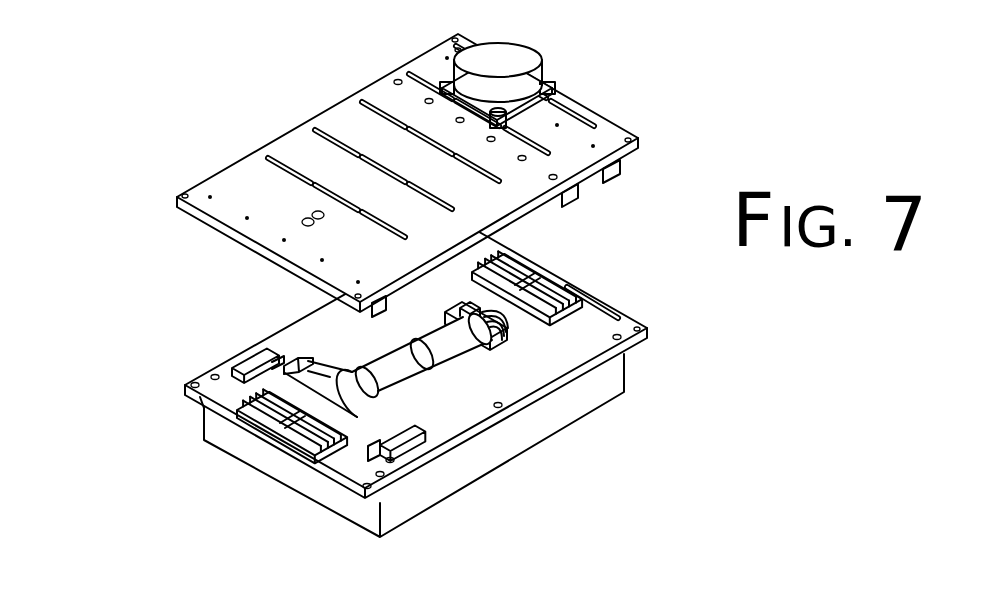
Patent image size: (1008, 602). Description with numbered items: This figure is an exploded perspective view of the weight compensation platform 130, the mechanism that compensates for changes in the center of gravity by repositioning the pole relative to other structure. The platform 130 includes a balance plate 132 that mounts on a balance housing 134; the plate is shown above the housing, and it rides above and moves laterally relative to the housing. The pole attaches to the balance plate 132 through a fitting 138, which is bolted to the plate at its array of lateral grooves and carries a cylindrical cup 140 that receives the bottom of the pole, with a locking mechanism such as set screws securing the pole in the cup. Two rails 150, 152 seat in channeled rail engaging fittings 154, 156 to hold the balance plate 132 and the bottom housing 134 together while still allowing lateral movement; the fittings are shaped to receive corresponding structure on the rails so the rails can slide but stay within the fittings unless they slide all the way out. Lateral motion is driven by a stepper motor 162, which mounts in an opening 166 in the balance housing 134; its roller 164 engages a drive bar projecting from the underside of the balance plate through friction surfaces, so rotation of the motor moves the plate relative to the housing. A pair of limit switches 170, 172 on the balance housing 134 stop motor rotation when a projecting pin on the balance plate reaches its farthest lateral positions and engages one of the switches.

The weight compensation platform 130 is at (226, 307).
The balance plate 132 is at (228, 165).
The balance housing 134 is at (647, 317).
The fitting 138 is at (556, 91).
The cylindrical cup 140 is at (538, 56).
The rail 150 is at (357, 312).
The rail 152 is at (578, 197).
The rail engaging fitting 154 is at (307, 430).
The rail engaging fitting 156 is at (577, 280).
The stepper motor 162 is at (403, 380).
The roller 164 is at (503, 323).
The opening 166 is at (427, 333).
The limit switch 170 is at (200, 397).
The limit switch 172 is at (397, 430).